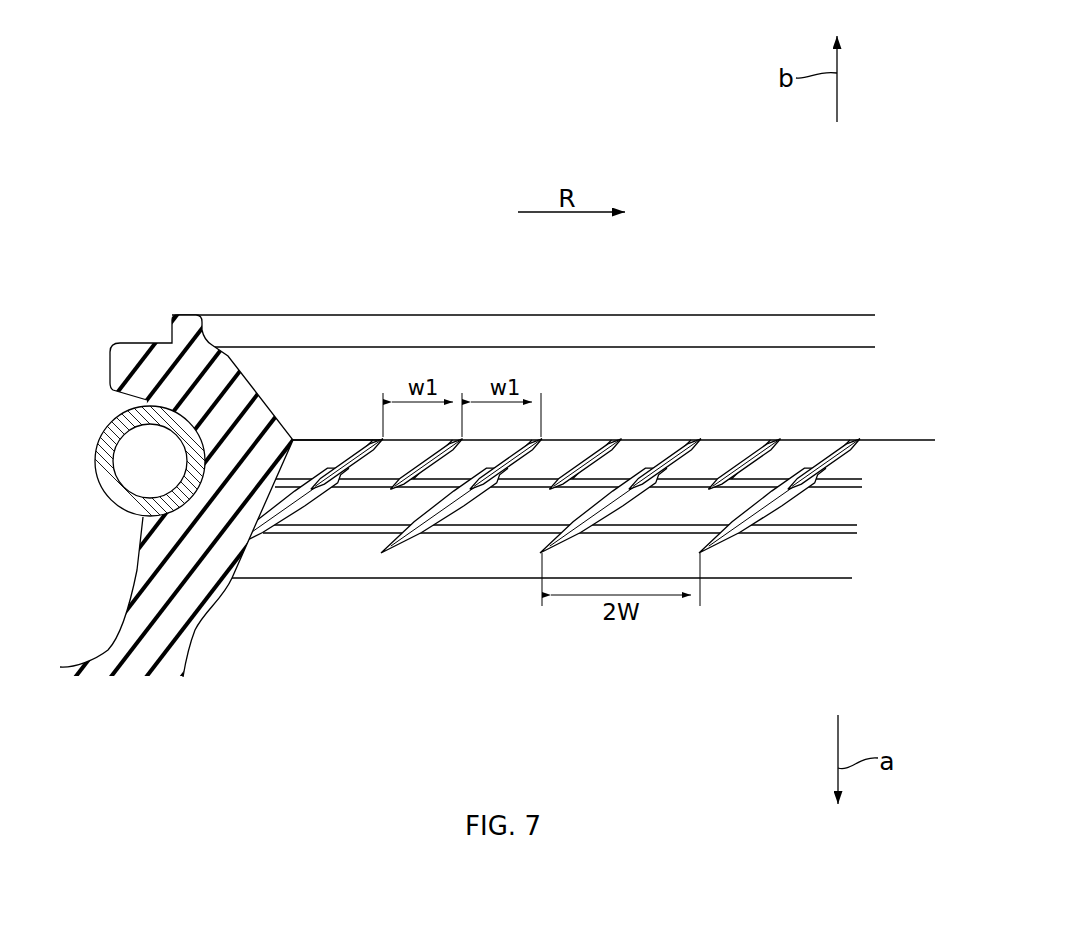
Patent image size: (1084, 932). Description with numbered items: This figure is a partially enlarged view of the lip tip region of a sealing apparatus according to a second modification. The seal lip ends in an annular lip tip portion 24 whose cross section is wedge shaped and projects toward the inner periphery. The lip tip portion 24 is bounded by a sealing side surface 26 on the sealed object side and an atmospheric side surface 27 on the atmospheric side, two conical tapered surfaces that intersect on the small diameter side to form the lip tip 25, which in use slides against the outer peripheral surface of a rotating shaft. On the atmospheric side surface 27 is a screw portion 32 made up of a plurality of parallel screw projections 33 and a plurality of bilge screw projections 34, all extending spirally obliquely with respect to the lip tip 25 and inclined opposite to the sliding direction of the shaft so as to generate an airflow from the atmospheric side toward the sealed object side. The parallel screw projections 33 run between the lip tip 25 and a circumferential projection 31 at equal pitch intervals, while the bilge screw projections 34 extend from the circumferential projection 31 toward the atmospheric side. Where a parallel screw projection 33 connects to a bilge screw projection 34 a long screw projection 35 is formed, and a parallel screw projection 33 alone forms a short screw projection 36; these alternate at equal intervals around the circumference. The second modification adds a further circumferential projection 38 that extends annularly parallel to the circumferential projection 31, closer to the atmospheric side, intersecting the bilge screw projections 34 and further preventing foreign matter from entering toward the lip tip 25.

The lip tip portion 24 is at (580, 358).
The lip tip 25 is at (342, 433).
The sealing side surface 26 is at (445, 365).
The atmospheric side surface 27 is at (313, 570).
The circumferential projection 31 is at (688, 490).
The screw portion 32 is at (831, 424).
The parallel screw projection 33 is at (594, 444).
The bilge screw projection 34 is at (457, 513).
The long screw projection 35 is at (581, 526).
The short screw projection 36 is at (638, 455).
The circumferential projection 38 is at (813, 536).